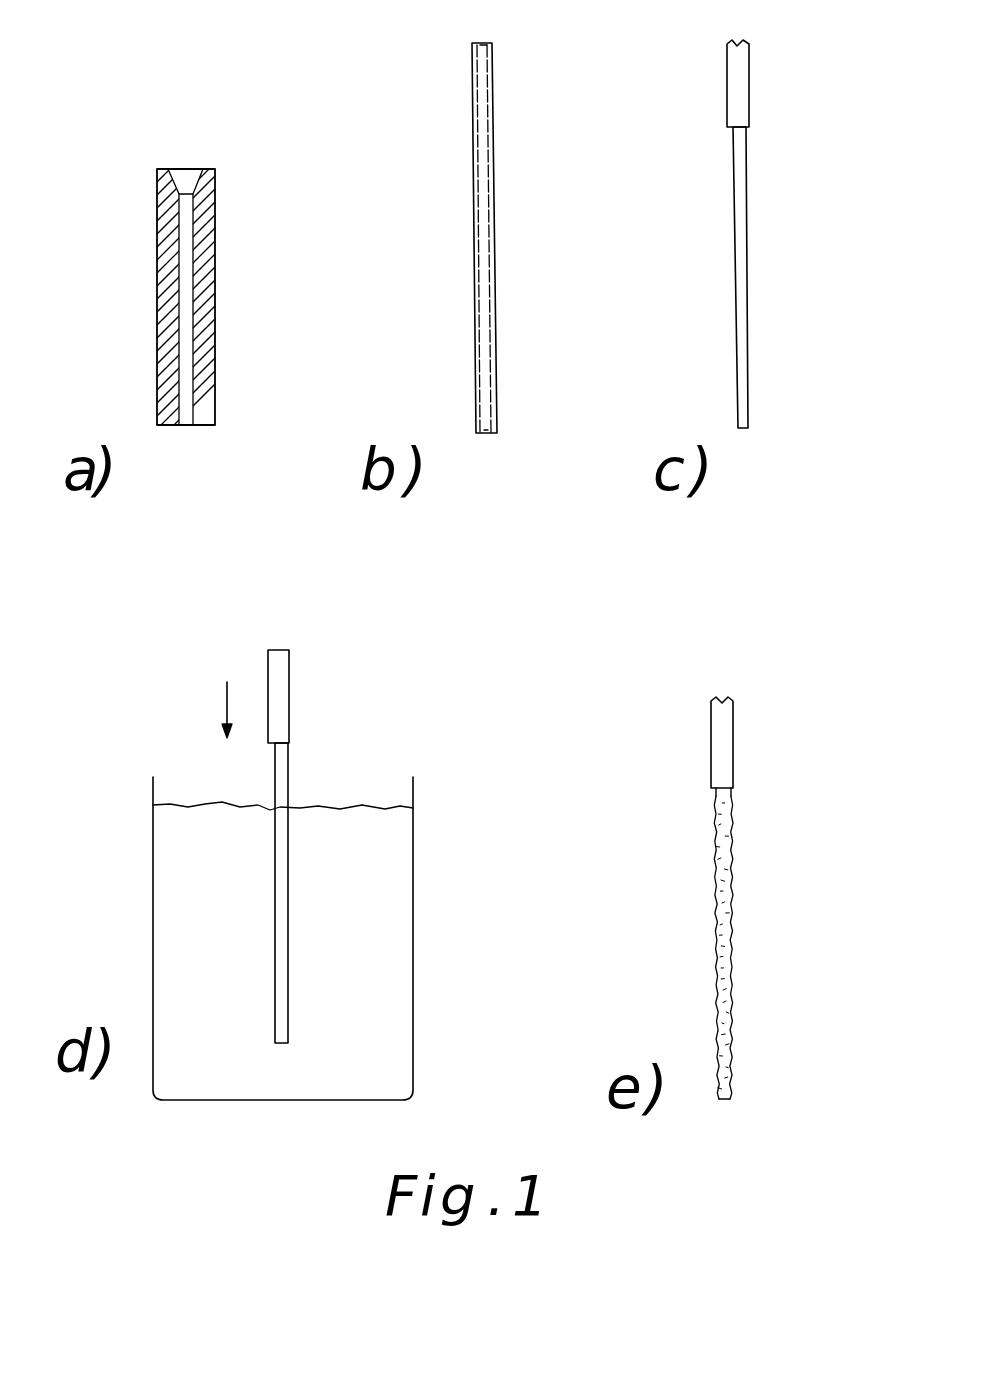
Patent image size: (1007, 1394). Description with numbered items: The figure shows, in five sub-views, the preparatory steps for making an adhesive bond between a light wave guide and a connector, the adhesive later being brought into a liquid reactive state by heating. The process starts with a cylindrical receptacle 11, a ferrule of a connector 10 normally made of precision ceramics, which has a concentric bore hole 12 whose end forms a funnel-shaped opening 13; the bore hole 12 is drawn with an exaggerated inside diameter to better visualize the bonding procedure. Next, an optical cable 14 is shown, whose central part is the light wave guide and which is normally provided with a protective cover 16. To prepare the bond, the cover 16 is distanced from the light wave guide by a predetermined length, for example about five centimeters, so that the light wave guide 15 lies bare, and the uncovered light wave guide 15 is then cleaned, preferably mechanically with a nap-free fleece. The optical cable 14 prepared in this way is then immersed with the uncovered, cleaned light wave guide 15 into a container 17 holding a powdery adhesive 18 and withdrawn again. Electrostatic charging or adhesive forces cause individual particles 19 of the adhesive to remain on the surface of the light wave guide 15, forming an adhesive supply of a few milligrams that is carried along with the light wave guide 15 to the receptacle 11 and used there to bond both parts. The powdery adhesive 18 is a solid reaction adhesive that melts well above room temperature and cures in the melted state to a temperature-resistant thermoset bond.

The connector 10 is at (242, 240).
The receptacle 11 is at (168, 307).
The bore hole 12 is at (188, 367).
The funnel-shaped opening 13 is at (183, 169).
The optical cable 14 is at (526, 156).
The light wave guide 15 is at (485, 352).
The protective cover 16 is at (497, 248).
The container 17 is at (413, 960).
The powdery adhesive 18 is at (380, 870).
The adhesive particles 19 is at (728, 918).